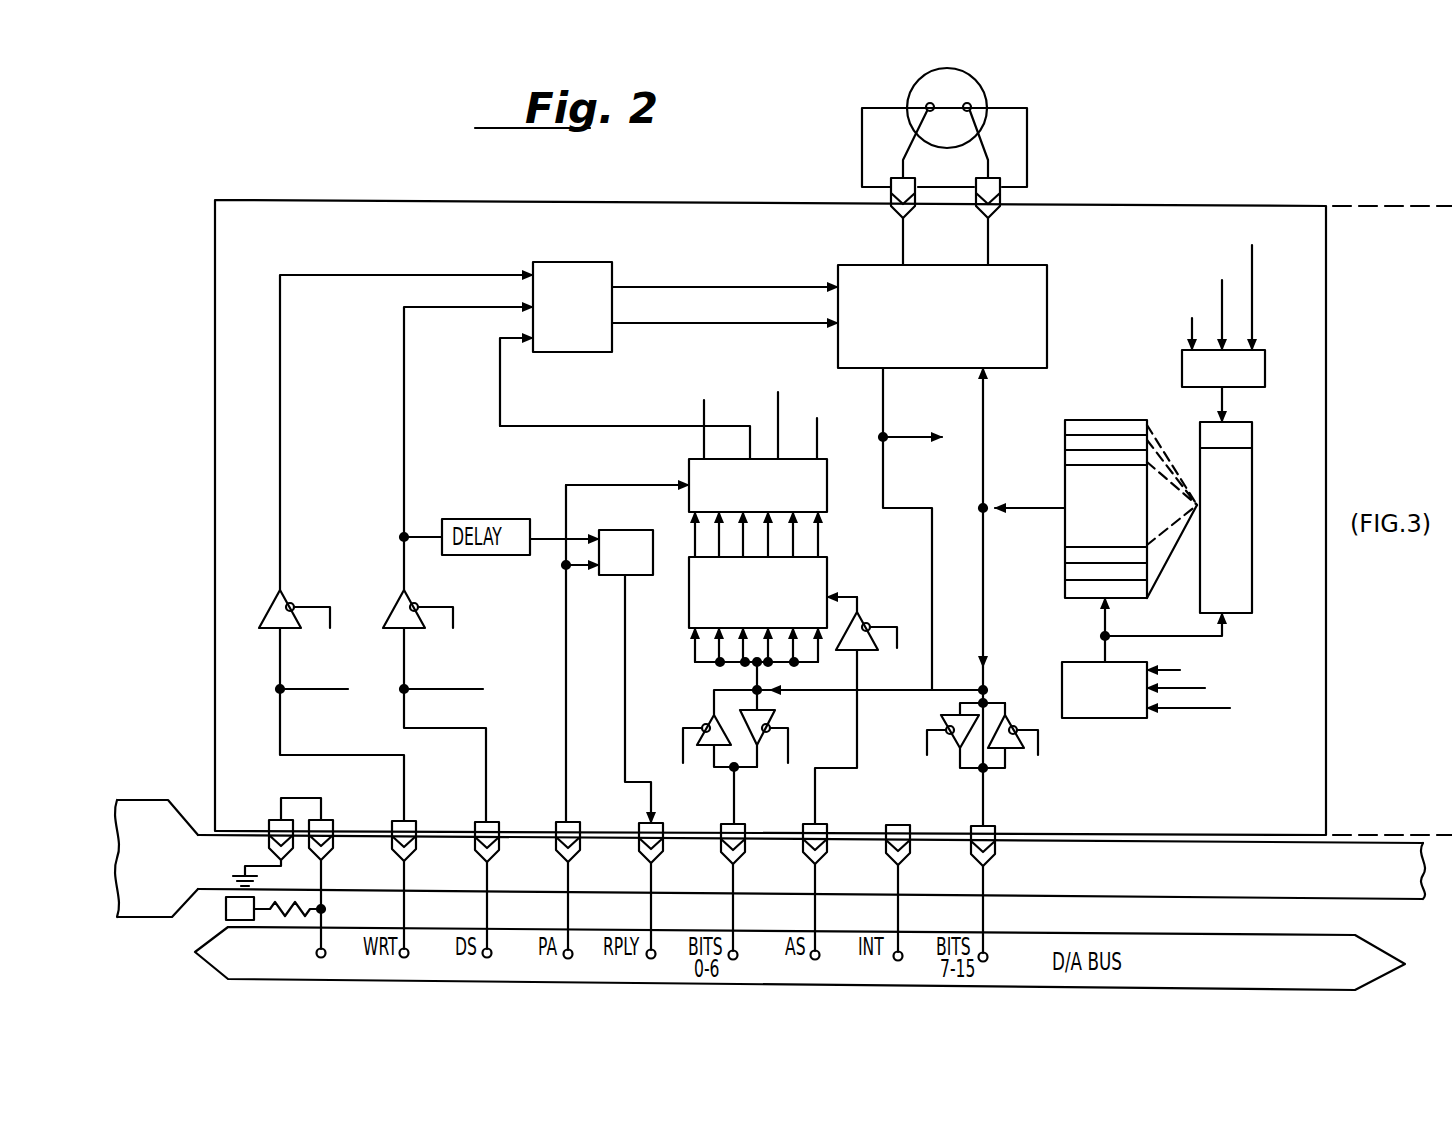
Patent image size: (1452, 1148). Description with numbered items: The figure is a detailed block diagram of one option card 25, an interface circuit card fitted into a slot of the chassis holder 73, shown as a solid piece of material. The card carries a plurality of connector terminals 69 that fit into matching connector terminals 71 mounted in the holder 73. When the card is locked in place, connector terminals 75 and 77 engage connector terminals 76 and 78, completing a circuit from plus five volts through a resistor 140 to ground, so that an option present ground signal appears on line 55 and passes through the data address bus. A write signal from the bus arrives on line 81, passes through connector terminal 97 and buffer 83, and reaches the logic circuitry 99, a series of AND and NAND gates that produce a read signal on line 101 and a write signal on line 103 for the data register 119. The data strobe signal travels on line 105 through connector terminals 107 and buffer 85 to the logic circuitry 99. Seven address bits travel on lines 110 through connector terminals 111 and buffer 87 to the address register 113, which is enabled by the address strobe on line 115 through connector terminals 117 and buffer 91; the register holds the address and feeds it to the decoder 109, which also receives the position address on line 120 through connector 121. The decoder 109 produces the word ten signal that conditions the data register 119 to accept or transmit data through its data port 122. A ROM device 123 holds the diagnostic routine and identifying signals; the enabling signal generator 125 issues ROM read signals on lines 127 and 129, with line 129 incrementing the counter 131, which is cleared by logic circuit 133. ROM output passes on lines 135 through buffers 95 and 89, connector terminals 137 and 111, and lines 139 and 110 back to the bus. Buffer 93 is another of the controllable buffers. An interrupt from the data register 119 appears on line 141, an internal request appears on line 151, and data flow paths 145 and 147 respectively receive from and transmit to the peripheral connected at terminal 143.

The option card 25 is at (490, 218).
The option present line 55 is at (325, 942).
The connector terminals 69 is at (1003, 831).
The matching connector terminals 71 is at (1003, 858).
The holder 73 is at (157, 822).
The connector terminal 75 is at (333, 824).
The connector terminal 76 is at (333, 850).
The connector terminal 77 is at (270, 825).
The connector terminal 78 is at (270, 848).
The write signal line 81 is at (406, 880).
The buffer 83 is at (285, 605).
The buffer 85 is at (400, 610).
The buffer 87 is at (712, 722).
The buffer 89 is at (778, 717).
The buffer 91 is at (862, 624).
The buffer 93 is at (1012, 727).
The buffer 95 is at (942, 726).
The connector terminal 97 is at (417, 822).
The logic circuitry 99 is at (555, 421).
The read signal line 101 is at (700, 283).
The write signal line 103 is at (700, 327).
The data strobe line 105 is at (489, 880).
The connector terminals 107 is at (499, 822).
The decoder 109 is at (818, 487).
The address bit lines 110 is at (733, 884).
The connector terminals 111 is at (745, 825).
The address register 113 is at (695, 590).
The address strobe line 115 is at (818, 882).
The connector terminals 117 is at (825, 826).
The data register 119 is at (1034, 327).
The position address line 120 is at (570, 882).
The connector 121 is at (580, 825).
The data port 122 is at (977, 371).
The ROM device 123 is at (1070, 478).
The enabling signal generator 125 is at (1130, 720).
The ROM read signal line 127 is at (1100, 628).
The ROM read signal line 129 is at (1228, 636).
The counter 131 is at (1243, 512).
The logic circuit 133 is at (1182, 362).
The ROM output lines 135 is at (1045, 512).
The connector terminals 137 is at (971, 828).
The data bit lines 139 is at (985, 882).
The resistor 140 is at (288, 920).
The interrupt line 141 is at (900, 882).
The terminal 143 is at (972, 90).
The data flow path 145 is at (903, 240).
The data flow path 147 is at (988, 245).
The internal request line 151 is at (913, 444).